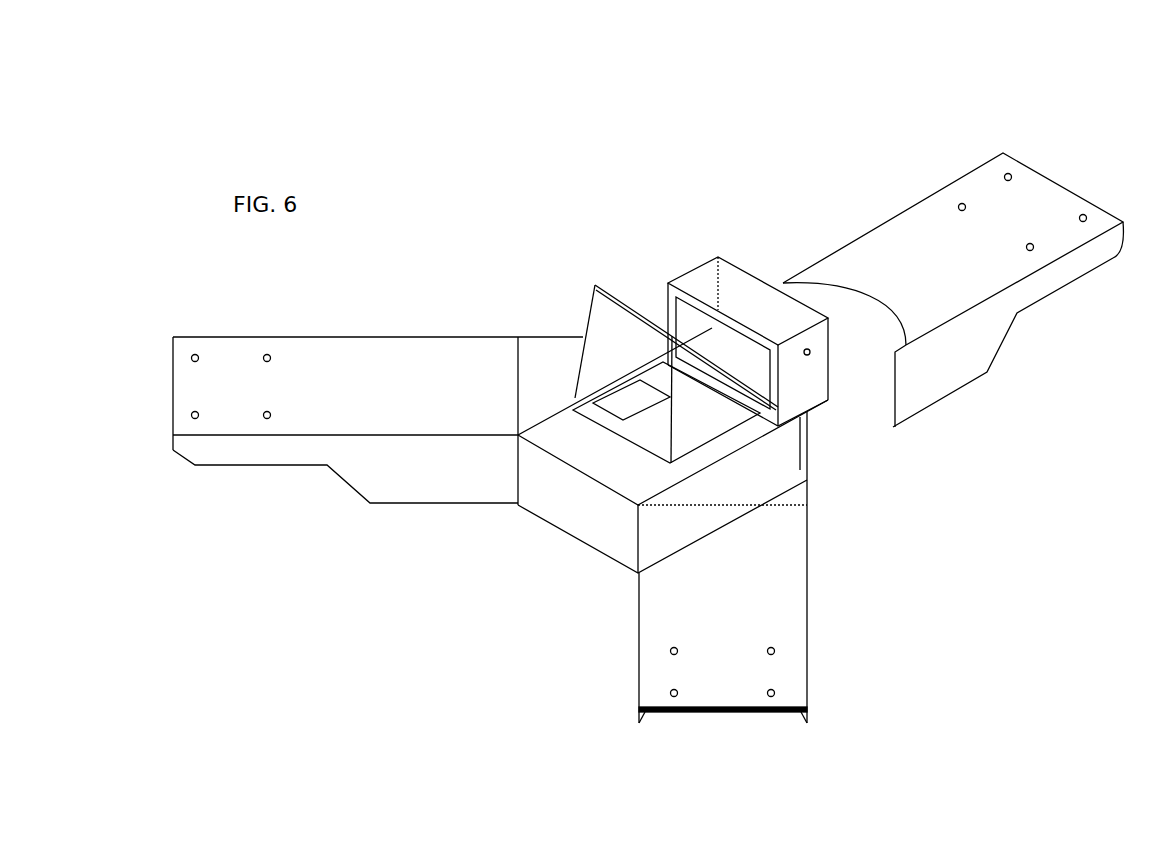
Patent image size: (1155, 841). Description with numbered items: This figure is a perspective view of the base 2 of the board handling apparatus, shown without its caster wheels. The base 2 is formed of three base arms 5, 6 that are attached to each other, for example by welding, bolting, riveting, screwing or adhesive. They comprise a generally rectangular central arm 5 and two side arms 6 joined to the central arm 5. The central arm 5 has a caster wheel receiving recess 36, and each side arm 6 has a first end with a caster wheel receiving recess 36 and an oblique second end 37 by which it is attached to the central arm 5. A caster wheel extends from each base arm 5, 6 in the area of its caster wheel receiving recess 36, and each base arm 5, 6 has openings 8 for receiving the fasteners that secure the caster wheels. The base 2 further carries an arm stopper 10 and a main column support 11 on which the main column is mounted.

The base 2 is at (955, 96).
The central arm 5 is at (1055, 270).
The side arms 6 is at (369, 470).
The openings 8 is at (777, 693).
The arm stopper 10 is at (595, 325).
The main column support 11 is at (718, 262).
The caster wheel receiving recess 36 is at (256, 465).
The oblique second end 37 is at (760, 437).